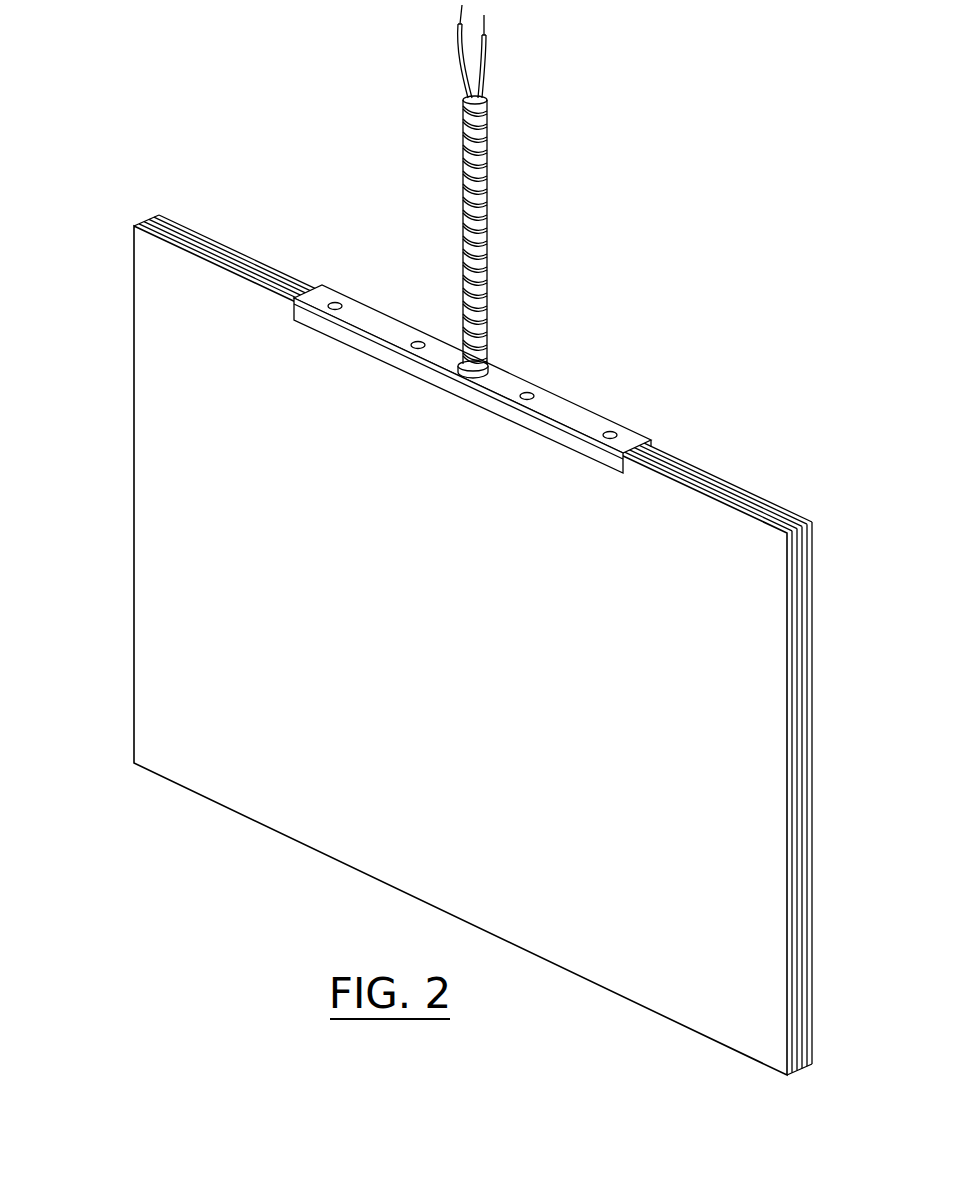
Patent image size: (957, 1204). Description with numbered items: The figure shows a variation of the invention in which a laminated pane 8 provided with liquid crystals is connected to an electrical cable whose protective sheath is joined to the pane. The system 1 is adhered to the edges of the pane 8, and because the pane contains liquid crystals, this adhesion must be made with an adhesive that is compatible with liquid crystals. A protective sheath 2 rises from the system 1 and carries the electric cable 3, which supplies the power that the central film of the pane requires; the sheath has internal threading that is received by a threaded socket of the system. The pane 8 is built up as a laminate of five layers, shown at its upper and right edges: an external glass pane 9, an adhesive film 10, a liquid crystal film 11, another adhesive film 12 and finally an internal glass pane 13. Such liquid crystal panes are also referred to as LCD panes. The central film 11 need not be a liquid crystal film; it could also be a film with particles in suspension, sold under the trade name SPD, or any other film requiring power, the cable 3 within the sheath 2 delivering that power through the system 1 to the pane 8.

The system 1 is at (582, 392).
The protective sheath 2 is at (452, 172).
The electric cable 3 is at (499, 54).
The pane 8 is at (449, 645).
The external glass pane 9 is at (680, 446).
The adhesive film 10 is at (709, 463).
The liquid crystal film 11 is at (744, 483).
The adhesive film 12 is at (768, 496).
The internal glass pane 13 is at (788, 514).